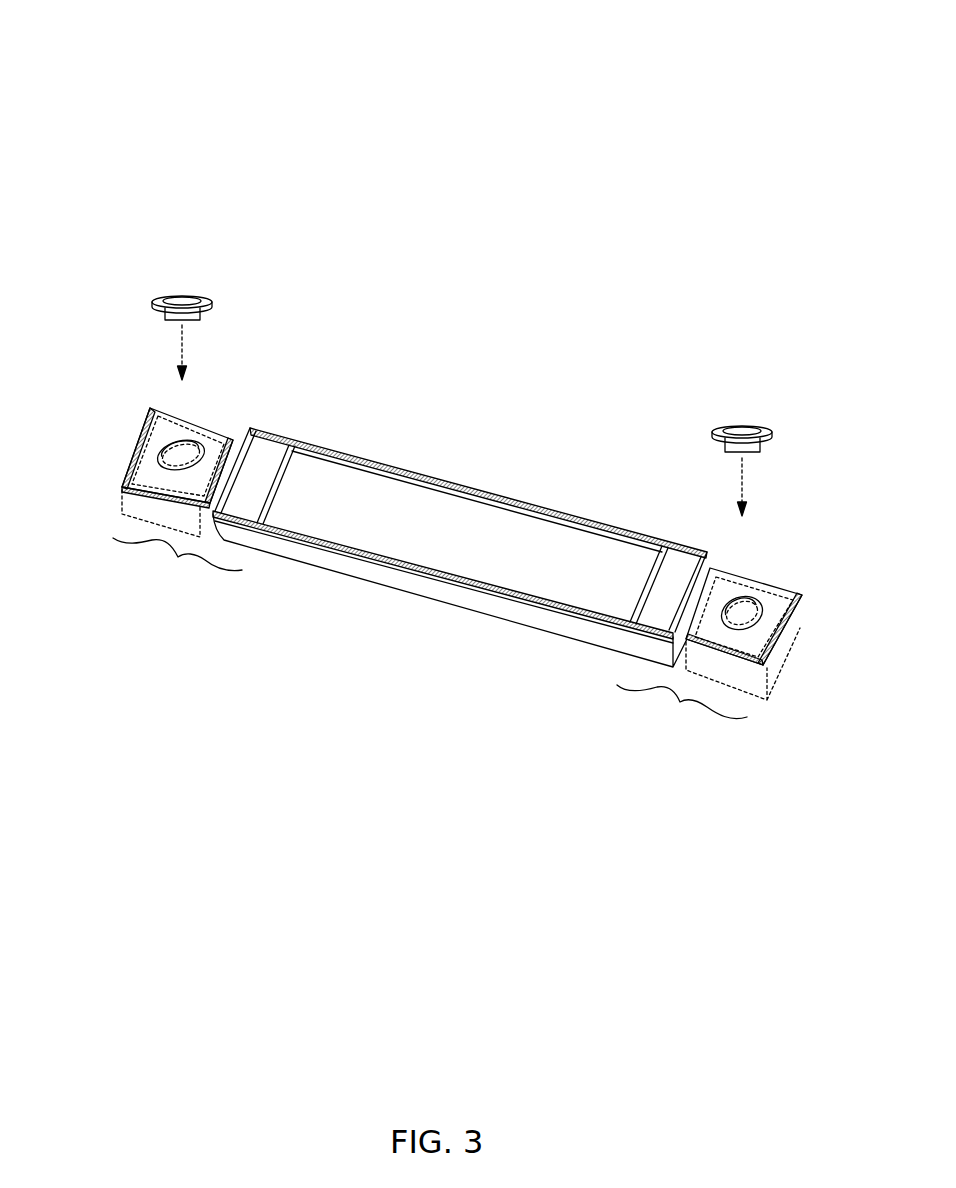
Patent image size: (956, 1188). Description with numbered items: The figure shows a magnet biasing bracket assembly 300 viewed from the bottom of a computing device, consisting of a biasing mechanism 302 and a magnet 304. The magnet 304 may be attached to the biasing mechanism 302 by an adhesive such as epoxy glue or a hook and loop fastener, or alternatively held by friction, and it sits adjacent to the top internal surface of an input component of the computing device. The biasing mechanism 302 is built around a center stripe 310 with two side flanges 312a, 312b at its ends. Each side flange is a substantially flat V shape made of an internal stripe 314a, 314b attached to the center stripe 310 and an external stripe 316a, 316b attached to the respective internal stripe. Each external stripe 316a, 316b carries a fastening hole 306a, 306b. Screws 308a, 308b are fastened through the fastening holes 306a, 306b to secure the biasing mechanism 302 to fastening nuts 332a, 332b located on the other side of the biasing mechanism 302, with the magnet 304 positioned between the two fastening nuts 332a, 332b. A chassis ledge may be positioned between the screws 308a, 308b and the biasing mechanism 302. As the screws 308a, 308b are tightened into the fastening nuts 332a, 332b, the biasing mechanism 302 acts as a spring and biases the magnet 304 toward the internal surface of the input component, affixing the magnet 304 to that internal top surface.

The magnet biasing bracket assembly 300 is at (203, 70).
The biasing mechanism 302 is at (362, 463).
The magnet 304 is at (415, 594).
The fastening hole 306a is at (160, 447).
The fastening hole 306b is at (762, 613).
The screw 308a is at (182, 296).
The screw 308b is at (742, 428).
The center stripe 310 is at (422, 508).
The side flange 312a is at (173, 570).
The side flange 312b is at (670, 732).
The internal stripe 314a is at (275, 452).
The internal stripe 314b is at (679, 568).
The external stripe 316a is at (208, 412).
The external stripe 316b is at (744, 572).
The fastening nut 332a is at (118, 490).
The fastening nut 332b is at (753, 697).